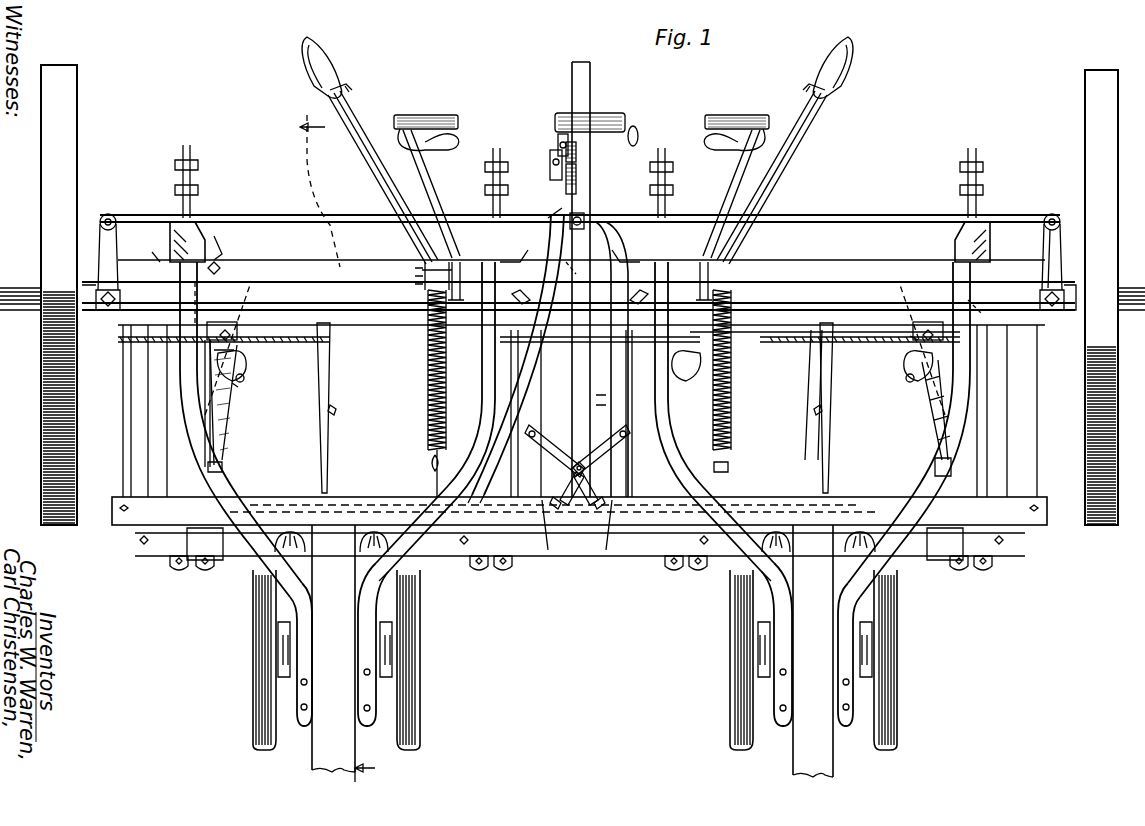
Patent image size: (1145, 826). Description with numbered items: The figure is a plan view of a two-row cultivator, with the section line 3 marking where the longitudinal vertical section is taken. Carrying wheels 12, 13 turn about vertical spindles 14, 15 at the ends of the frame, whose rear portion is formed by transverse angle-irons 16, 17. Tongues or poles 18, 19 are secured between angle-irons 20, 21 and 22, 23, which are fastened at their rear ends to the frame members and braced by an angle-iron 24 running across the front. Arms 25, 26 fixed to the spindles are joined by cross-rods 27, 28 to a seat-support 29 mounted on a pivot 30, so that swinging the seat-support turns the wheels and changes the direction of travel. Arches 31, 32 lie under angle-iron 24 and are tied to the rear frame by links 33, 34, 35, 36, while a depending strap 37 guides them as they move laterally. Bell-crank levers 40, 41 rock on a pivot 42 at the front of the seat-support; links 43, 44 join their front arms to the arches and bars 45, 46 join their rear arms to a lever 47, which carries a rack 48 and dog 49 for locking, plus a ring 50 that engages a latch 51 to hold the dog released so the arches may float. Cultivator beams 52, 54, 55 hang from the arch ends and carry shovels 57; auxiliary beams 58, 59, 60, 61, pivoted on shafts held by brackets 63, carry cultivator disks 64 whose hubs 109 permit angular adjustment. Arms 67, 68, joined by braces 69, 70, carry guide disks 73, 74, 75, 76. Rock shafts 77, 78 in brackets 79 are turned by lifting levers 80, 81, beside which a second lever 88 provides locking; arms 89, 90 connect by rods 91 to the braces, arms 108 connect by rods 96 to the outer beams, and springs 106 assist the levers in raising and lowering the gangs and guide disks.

The carrying wheel 12 is at (1085, 163).
The carrying wheel 13 is at (55, 228).
The vertical spindle 14 is at (1058, 312).
The vertical spindle 15 is at (106, 312).
The angle-iron 16 is at (826, 280).
The angle-iron 17 is at (770, 335).
The tongue or pole 18 is at (812, 762).
The tongue or pole 19 is at (340, 756).
The angle-iron 20 is at (878, 565).
The angle-iron 21 is at (752, 565).
The angle-iron 22 is at (420, 568).
The angle-iron 23 is at (268, 553).
The angle-iron 24 is at (579, 546).
The arm 25 is at (1062, 268).
The arm 26 is at (175, 255).
The cross-rod 27 is at (873, 217).
The cross-rod 28 is at (258, 217).
The seat-support 29 is at (590, 78).
The pivot 30 is at (560, 268).
The arch 31 is at (890, 510).
The arch 32 is at (438, 520).
The link 33 is at (1000, 445).
The link 34 is at (586, 470).
The link 35 is at (150, 466).
The link 36 is at (523, 470).
The depending strap or bar 37 is at (980, 248).
The bell-crank lever 40 is at (600, 452).
The bell-crank lever 41 is at (547, 450).
The pivot 42 is at (566, 488).
The link 43 is at (612, 500).
The link 44 is at (542, 500).
The bar 45 is at (630, 352).
The bar 46 is at (528, 390).
The lever 47 is at (560, 140).
The rack 48 is at (552, 170).
The dog 49 is at (578, 170).
The ring 50 is at (626, 135).
The latch 51 is at (578, 152).
The cultivator beam 52 is at (935, 450).
The cultivator beam 54 is at (437, 444).
The cultivator beam 55 is at (226, 462).
The cultivator shovel 57 is at (185, 248).
The auxiliary beam 58 is at (928, 400).
The auxiliary beam 59 is at (608, 395).
The auxiliary beam 60 is at (428, 408).
The auxiliary beam 61 is at (226, 420).
The bracket 63 is at (200, 568).
The cultivator disk 64 is at (260, 300).
The arm 67 is at (385, 612).
The arm 68 is at (290, 612).
The brace 69 is at (370, 545).
The brace 70 is at (302, 540).
The guide disk or wheel 73 is at (885, 683).
The guide disk or wheel 74 is at (740, 683).
The guide disk or wheel 75 is at (405, 668).
The guide disk or wheel 76 is at (262, 683).
The rock shaft 77 is at (891, 361).
The rock shaft 78 is at (425, 322).
The bracket 79 is at (195, 262).
The lifting lever 80 is at (790, 152).
The lifting lever 81 is at (392, 193).
The second lever 88 is at (445, 150).
The forwardly-projecting arm 89 is at (820, 375).
The forwardly-projecting arm 90 is at (326, 372).
The rod 91 is at (322, 448).
The rod 96 is at (250, 368).
The spring 106 is at (455, 330).
The arm 108 is at (238, 348).
The hub 109 is at (200, 340).
The section line 3 is at (335, 445).